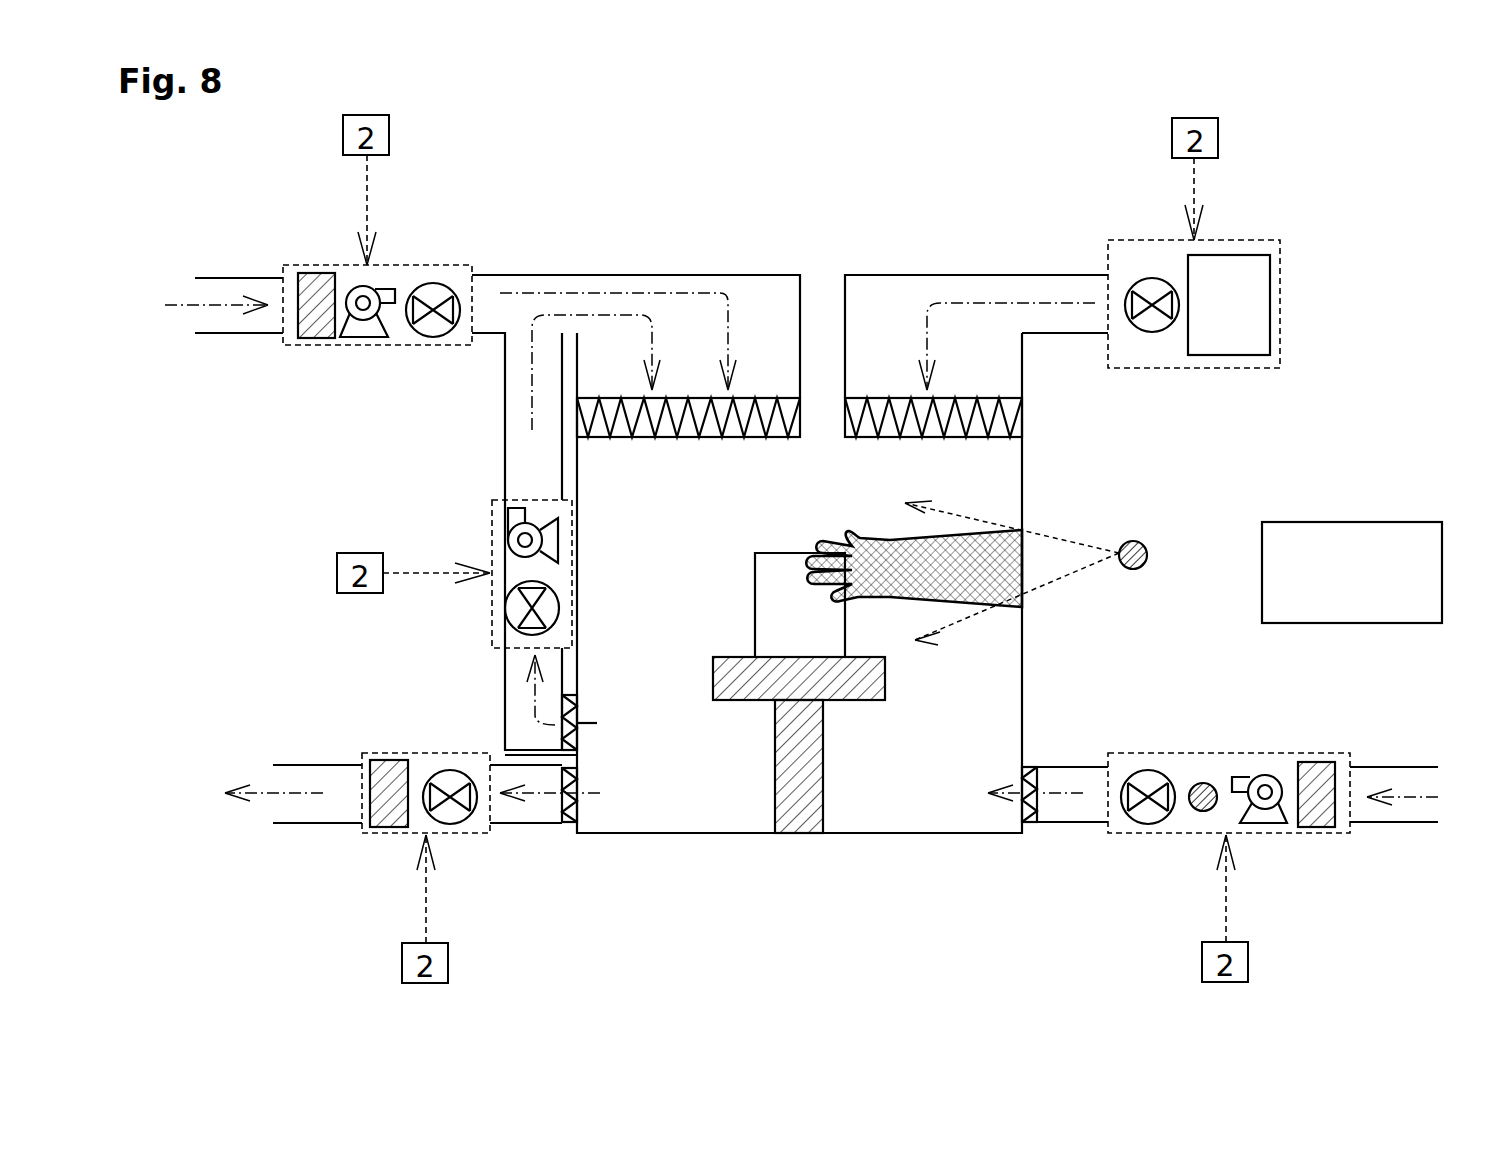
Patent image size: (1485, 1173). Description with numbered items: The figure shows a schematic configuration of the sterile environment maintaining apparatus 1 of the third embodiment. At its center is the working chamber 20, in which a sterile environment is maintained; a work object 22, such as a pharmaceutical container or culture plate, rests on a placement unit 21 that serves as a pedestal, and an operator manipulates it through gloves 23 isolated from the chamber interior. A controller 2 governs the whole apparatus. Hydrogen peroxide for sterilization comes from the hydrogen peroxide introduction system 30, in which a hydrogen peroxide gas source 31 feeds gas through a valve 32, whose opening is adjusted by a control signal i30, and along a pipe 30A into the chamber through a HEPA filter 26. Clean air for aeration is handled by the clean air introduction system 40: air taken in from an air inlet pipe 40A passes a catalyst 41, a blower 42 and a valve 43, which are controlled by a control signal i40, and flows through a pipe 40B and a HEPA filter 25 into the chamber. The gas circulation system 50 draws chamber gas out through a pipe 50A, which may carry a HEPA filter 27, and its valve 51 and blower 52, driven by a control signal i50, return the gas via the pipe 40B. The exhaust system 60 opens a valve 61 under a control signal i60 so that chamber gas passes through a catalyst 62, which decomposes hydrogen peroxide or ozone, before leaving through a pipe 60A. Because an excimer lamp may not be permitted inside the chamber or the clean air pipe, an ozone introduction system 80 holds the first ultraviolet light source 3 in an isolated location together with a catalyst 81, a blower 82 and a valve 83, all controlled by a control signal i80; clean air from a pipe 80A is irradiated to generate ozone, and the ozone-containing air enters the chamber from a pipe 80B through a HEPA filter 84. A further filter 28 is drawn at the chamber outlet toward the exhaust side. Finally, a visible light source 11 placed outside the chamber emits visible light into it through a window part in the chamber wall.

The sterile environment maintaining apparatus 1 is at (1338, 924).
The controller 2 is at (1363, 522).
The first ultraviolet light source 3 is at (1202, 782).
The visible light source 11 is at (1147, 550).
The working chamber 20 is at (925, 833).
The placement unit 21 is at (887, 678).
The work object 22 is at (763, 605).
The gloves 23 is at (832, 543).
The HEPA filter 25 is at (663, 430).
The HEPA filter 26 is at (1022, 432).
The HEPA filter 27 is at (577, 707).
The filter 28 is at (579, 805).
The hydrogen peroxide introduction system 30 is at (1236, 339).
The pipe 30A is at (950, 275).
The hydrogen peroxide gas source 31 is at (1237, 355).
The valve 32 is at (1150, 333).
The clean air introduction system 40 is at (386, 316).
The air inlet pipe 40A is at (247, 337).
The pipe 40B is at (627, 275).
The catalyst 41 is at (318, 345).
The blower 42 is at (370, 340).
The valve 43 is at (433, 283).
The gas circulation system 50 is at (476, 561).
The pipe 50A is at (505, 722).
The valve 51 is at (503, 617).
The blower 52 is at (510, 527).
The exhaust system 60 is at (453, 798).
The pipe 60A is at (292, 765).
The valve 61 is at (453, 828).
The catalyst 62 is at (387, 827).
The ozone introduction system 80 is at (1256, 766).
The pipe 80A is at (1377, 767).
The pipe 80B is at (1060, 783).
The catalyst 81 is at (1318, 827).
The blower 82 is at (1263, 777).
The valve 83 is at (1145, 768).
The HEPA filter 84 is at (1032, 823).
The control signal i30 is at (1215, 179).
The control signal i40 is at (388, 190).
The control signal i50 is at (414, 602).
The control signal i60 is at (407, 909).
The control signal i80 is at (1205, 909).